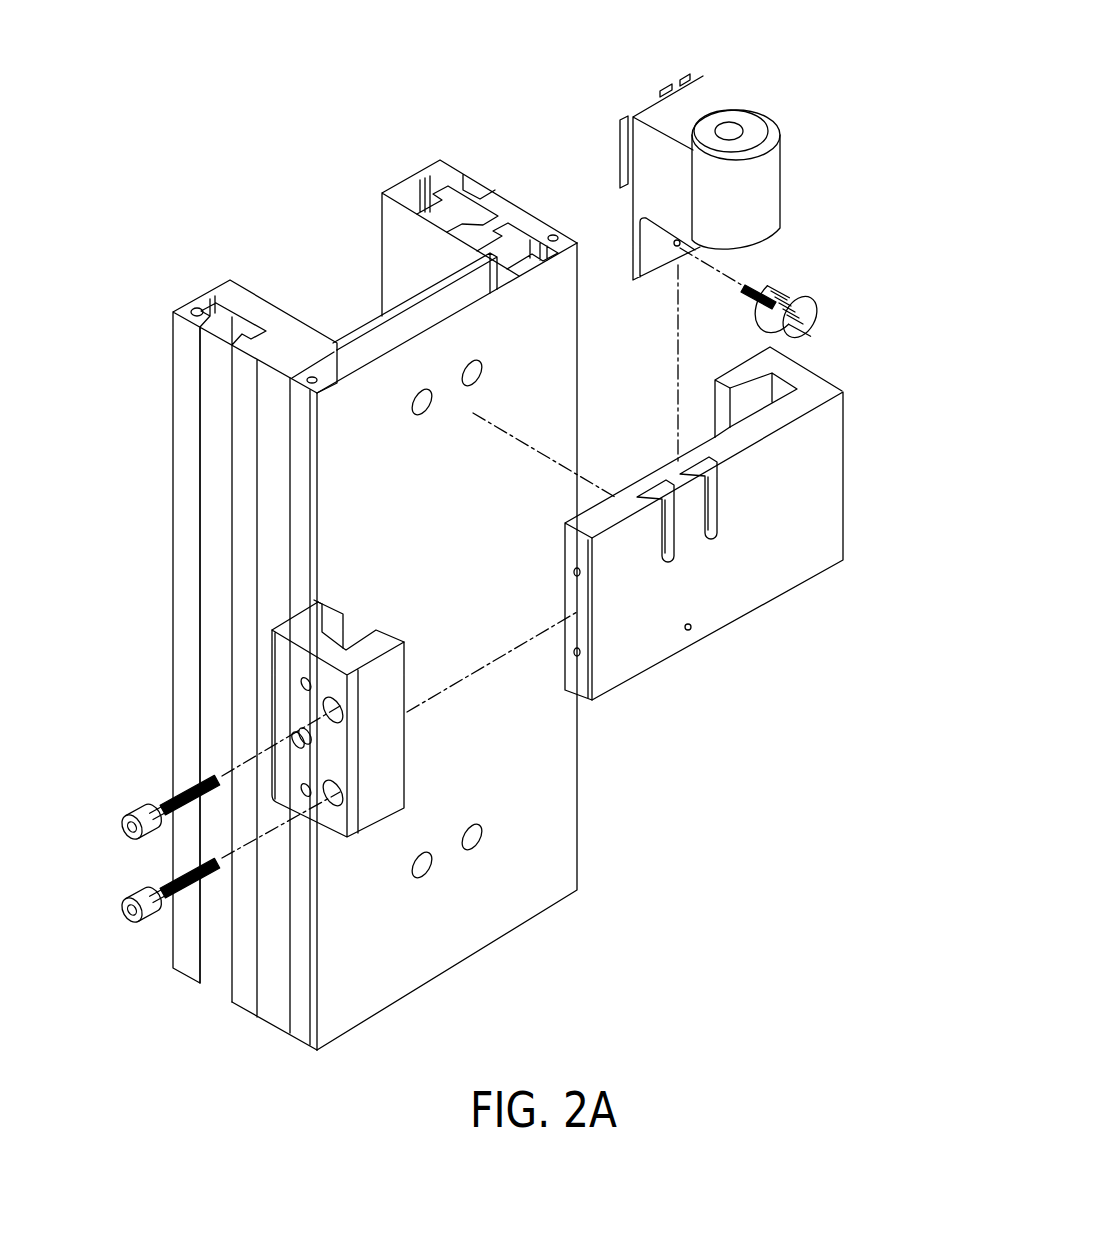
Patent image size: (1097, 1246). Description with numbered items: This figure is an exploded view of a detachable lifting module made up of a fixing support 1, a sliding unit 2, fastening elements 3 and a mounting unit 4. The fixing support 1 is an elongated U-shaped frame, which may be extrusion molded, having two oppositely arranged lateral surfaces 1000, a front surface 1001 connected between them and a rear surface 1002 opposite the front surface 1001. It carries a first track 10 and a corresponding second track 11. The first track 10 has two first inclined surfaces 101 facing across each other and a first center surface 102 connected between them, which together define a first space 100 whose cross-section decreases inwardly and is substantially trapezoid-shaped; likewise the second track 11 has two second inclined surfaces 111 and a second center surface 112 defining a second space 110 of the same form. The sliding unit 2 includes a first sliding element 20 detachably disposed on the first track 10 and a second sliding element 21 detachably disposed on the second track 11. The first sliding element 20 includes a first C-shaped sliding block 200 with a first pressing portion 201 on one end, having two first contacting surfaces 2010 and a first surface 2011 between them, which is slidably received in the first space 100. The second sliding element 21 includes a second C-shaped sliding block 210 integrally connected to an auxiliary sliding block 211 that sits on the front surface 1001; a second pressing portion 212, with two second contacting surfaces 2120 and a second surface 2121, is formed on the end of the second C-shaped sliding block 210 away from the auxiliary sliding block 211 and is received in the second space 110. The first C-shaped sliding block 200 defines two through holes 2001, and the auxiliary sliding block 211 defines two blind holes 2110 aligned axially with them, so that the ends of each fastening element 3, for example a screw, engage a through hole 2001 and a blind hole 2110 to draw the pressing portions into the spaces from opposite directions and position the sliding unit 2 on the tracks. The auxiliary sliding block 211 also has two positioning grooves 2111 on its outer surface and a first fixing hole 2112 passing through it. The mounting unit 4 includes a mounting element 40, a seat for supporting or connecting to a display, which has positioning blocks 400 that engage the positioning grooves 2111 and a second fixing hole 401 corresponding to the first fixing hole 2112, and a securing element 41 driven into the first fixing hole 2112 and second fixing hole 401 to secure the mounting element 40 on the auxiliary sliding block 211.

The fixing support 1 is at (517, 92).
The first track 10 is at (280, 405).
The second track 11 is at (513, 183).
The first space 100 is at (275, 367).
The first inclined surfaces 101 is at (262, 465).
The first center surface 102 is at (300, 348).
The second space 110 is at (485, 228).
The second inclined surfaces 111 is at (548, 224).
The second center surface 112 is at (470, 252).
The lateral surfaces 1000 is at (300, 543).
The front surface 1001 is at (537, 318).
The rear surface 1002 is at (178, 300).
The sliding unit 2 is at (400, 912).
The first sliding element 20 is at (377, 835).
The first C-shaped sliding block 200 is at (390, 720).
The first pressing portion 201 is at (270, 635).
The through holes 2001 is at (340, 797).
The first contacting surfaces 2010 is at (310, 620).
The first surface 2011 is at (320, 603).
The second sliding element 21 is at (773, 613).
The second C-shaped sliding block 210 is at (810, 395).
The auxiliary sliding block 211 is at (807, 470).
The second pressing portion 212 is at (797, 375).
The blind holes 2110 is at (575, 572).
The positioning grooves 2111 is at (663, 520).
The first fixing hole 2112 is at (689, 630).
The second contacting surfaces 2120 is at (742, 400).
The second surface 2121 is at (720, 423).
The fastening element 3 is at (150, 797).
The mounting unit 4 is at (788, 24).
The mounting element 40 is at (750, 93).
The positioning block 400 is at (675, 82).
The second fixing hole 401 is at (677, 245).
The securing element 41 is at (807, 282).